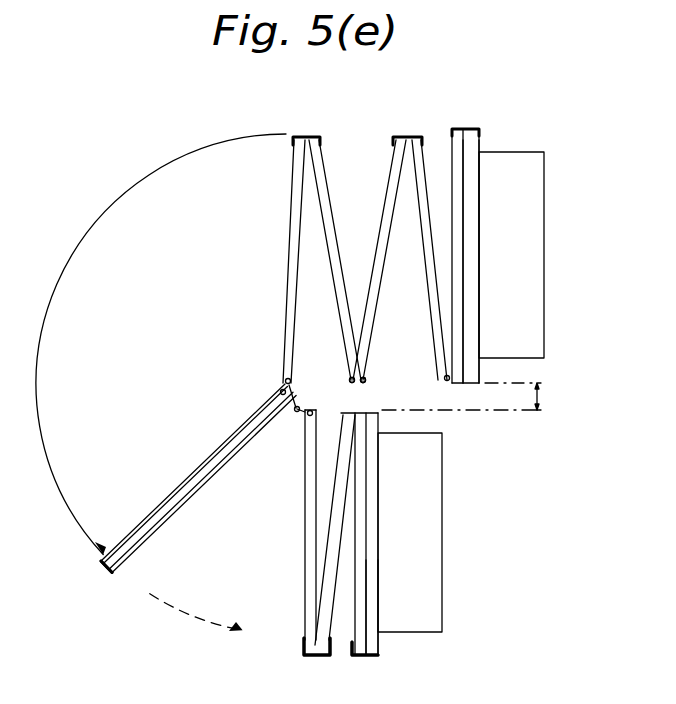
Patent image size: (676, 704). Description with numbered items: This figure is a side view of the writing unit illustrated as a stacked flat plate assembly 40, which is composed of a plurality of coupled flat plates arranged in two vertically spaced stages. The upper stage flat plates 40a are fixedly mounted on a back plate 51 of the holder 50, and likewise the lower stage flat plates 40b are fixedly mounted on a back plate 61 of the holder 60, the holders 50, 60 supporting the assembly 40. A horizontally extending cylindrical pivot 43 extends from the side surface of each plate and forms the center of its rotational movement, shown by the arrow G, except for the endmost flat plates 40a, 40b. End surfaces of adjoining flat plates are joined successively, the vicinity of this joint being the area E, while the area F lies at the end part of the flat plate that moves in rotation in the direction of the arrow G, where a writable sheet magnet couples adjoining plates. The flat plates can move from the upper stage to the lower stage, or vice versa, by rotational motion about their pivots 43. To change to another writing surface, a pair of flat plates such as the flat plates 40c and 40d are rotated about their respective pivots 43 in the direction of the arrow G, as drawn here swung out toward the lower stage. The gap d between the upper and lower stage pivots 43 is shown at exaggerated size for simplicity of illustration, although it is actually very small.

The stacked flat plate assembly 40 is at (386, 95).
The upper stage flat plate 40a is at (458, 130).
The lower stage flat plate 40b is at (444, 318).
The flat plate 40c is at (191, 465).
The flat plate 40d is at (201, 498).
The pivot 43 is at (348, 381).
The holder 50 is at (545, 238).
The back plate 51 is at (470, 148).
The holder 60 is at (443, 540).
The back plate 61 is at (378, 648).
The area E is at (370, 382).
The area F is at (318, 663).
The arrow G is at (42, 332).
The gap d is at (541, 398).